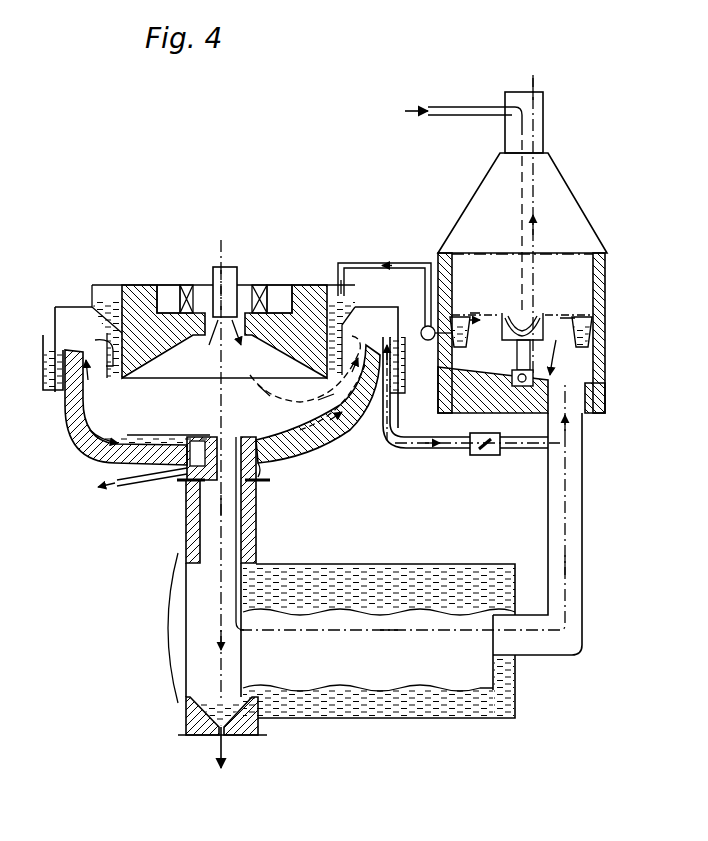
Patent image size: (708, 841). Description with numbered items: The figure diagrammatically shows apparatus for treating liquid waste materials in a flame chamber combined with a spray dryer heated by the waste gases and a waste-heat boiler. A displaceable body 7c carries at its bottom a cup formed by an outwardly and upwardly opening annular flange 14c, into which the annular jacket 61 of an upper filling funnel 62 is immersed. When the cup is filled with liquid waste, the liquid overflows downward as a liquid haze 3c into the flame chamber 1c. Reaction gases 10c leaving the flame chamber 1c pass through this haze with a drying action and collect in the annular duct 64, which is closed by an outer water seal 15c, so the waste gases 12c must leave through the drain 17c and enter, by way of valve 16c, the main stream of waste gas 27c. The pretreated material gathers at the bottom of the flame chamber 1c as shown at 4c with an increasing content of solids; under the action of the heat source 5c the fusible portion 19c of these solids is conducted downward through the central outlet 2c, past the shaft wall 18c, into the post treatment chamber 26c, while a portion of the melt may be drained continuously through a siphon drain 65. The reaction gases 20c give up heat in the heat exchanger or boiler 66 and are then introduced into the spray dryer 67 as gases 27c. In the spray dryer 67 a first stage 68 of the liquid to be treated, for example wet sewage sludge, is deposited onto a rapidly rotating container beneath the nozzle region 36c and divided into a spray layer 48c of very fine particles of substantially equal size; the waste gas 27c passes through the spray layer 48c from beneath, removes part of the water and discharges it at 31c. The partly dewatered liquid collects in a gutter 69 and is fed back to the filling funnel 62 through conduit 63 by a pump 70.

The flame chamber 1c is at (305, 420).
The central outlet 2c is at (234, 446).
The liquid haze 3c is at (84, 392).
The pretreated material 4c is at (155, 418).
The heat source 5c is at (237, 275).
The displaceable body 7c is at (140, 330).
The reaction gases 10c is at (262, 388).
The waste gases 12c is at (386, 332).
The annular flange 14c is at (106, 350).
The outer water seal 15c is at (47, 388).
The valve 16c is at (483, 456).
The drain 17c is at (413, 449).
The shaft wall 18c is at (243, 512).
The fusible portion 19c is at (221, 673).
The reaction gases 20c is at (237, 558).
The post treatment chamber 26c is at (239, 747).
The main stream of waste gas 27c is at (566, 484).
The dryer discharge 31c is at (536, 131).
The spray nozzle 36c is at (540, 313).
The spray layer 48c is at (461, 316).
The annular jacket 61 is at (148, 350).
The filling funnel 62 is at (106, 305).
The conduit 63 is at (343, 262).
The annular duct 64 is at (67, 320).
The siphon drain 65 is at (120, 485).
The boiler 66 is at (398, 712).
The spray dryer 67 is at (560, 215).
The first stage 68 is at (458, 204).
The gutter 69 is at (580, 317).
The pump 70 is at (427, 340).